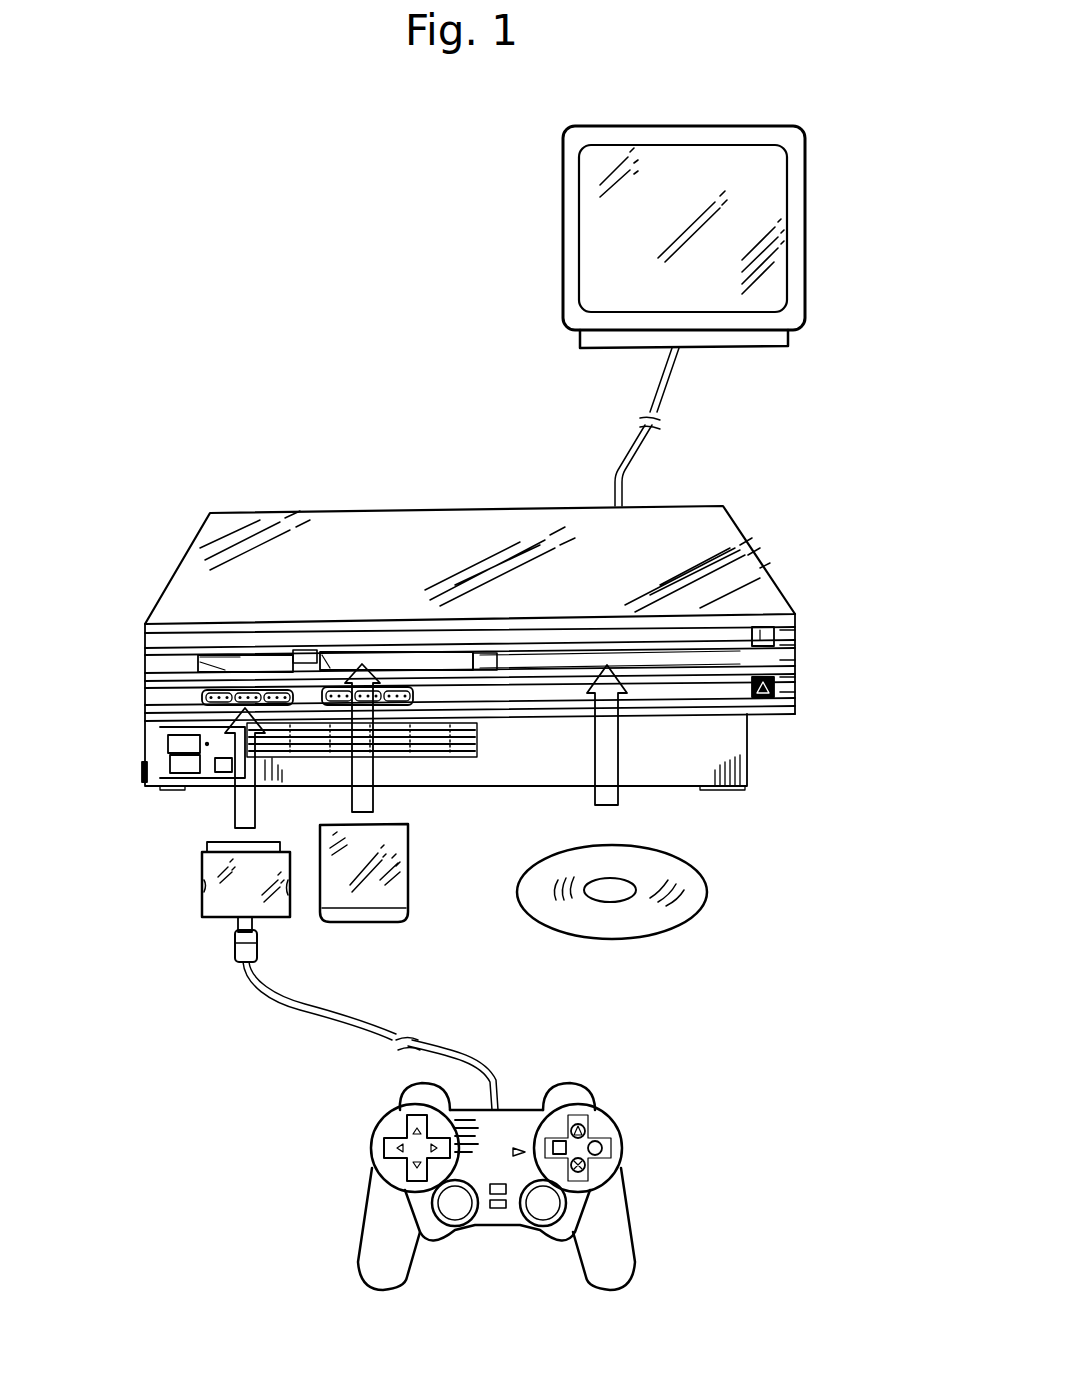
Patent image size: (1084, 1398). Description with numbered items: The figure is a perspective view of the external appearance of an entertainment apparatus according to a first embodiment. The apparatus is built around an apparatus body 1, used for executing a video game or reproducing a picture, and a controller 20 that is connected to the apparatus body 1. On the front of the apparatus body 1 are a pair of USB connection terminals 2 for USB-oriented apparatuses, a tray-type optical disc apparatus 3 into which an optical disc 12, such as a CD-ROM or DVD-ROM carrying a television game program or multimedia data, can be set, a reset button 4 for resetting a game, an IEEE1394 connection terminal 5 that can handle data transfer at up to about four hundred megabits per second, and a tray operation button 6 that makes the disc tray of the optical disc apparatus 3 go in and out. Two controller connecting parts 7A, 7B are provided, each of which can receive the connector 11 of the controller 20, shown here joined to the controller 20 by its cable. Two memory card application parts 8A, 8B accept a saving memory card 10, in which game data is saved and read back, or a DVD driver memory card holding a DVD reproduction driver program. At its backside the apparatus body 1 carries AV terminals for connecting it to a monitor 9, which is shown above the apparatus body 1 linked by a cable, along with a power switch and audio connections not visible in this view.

The apparatus body 1 is at (722, 532).
The USB connection terminals 2 is at (168, 744).
The optical disc apparatus 3 is at (600, 662).
The reset button 4 is at (760, 636).
The IEEE1394 connection terminal 5 is at (222, 774).
The tray operation button 6 is at (765, 700).
The controller connecting part 7A is at (205, 707).
The controller connecting part 7B is at (410, 706).
The memory card application part 8A is at (238, 652).
The memory card application part 8B is at (357, 651).
The monitor 9 is at (800, 137).
The saving memory card 10 is at (418, 863).
The connector 11 is at (212, 892).
The optical disc 12 is at (700, 860).
The controller 20 is at (642, 1165).